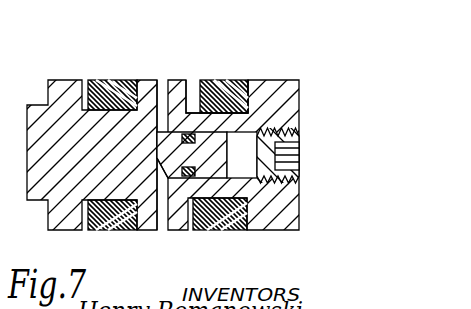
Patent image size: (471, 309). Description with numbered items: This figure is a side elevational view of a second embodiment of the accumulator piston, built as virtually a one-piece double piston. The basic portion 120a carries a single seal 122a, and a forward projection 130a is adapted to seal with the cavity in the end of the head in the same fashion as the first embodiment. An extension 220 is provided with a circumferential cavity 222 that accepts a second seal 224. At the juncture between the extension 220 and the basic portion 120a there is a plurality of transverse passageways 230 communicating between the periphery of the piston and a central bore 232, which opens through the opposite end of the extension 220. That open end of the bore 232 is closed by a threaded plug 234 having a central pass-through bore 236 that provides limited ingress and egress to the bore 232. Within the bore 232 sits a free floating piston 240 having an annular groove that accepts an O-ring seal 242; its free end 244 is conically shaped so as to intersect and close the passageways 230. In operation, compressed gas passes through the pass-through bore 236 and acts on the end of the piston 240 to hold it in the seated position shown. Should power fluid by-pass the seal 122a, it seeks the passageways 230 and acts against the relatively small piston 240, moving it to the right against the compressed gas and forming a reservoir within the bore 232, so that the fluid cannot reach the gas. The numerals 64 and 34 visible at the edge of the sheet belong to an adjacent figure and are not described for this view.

The basic portion 120a is at (63, 92).
The single seal 122a is at (120, 82).
The forward projection 130a is at (25, 182).
The transverse passageways 230 is at (163, 97).
The free floating piston 240 is at (273, 82).
The extension 220 is at (263, 90).
The second seal 224 is at (230, 88).
The circumferential cavity 222 is at (192, 232).
The central bore 232 is at (240, 165).
The O-ring seal 242 is at (183, 110).
The free end 244 is at (167, 182).
The threaded plug 234 is at (302, 135).
The central pass-through bore 236 is at (298, 160).
The cropped numeral 64 is at (0, 28).
The cropped numeral 34 is at (0, 86).